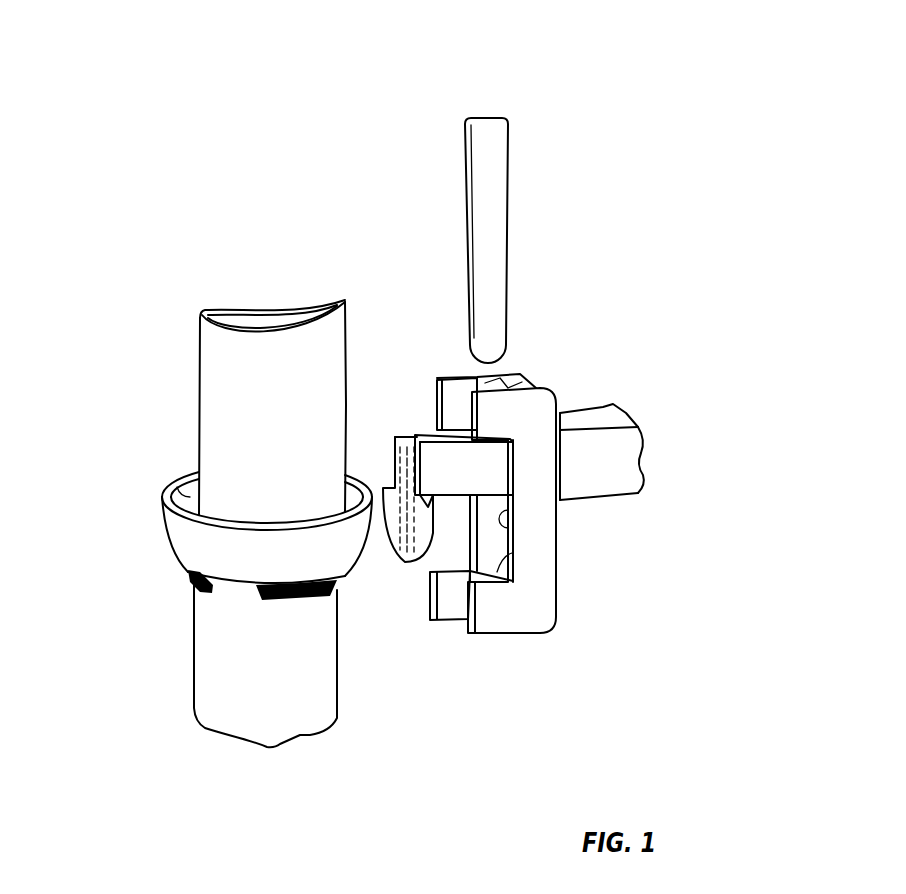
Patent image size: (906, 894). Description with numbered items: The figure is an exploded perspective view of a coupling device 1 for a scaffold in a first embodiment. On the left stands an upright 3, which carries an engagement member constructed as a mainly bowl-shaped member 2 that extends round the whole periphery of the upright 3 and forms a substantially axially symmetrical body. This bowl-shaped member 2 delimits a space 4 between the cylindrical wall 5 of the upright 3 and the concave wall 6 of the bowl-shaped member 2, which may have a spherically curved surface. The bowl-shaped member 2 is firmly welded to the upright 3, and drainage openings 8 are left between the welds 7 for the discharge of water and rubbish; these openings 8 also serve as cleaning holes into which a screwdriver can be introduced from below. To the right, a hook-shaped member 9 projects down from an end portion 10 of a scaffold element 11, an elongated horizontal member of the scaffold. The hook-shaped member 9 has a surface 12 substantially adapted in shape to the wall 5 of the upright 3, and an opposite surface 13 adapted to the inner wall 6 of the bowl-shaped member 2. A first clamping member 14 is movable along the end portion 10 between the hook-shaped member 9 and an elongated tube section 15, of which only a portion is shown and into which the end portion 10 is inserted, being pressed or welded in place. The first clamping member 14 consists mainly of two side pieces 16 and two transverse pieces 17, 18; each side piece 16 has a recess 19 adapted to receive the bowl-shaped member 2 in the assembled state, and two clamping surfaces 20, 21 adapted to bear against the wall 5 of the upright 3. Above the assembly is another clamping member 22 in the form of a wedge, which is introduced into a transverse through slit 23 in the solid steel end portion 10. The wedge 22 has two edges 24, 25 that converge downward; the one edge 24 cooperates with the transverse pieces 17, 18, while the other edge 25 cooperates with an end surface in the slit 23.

The coupling device 1 is at (544, 342).
The bowl-shaped member 2 is at (152, 545).
The upright 3 is at (185, 428).
The space 4 is at (177, 487).
The cylindrical wall 5 is at (210, 452).
The concave wall 6 is at (355, 494).
The welds 7 is at (186, 586).
The drainage openings 8 is at (235, 585).
The hook-shaped member 9 is at (383, 568).
The end portion 10 is at (435, 465).
The scaffold element 11 is at (602, 388).
The surface 12 is at (427, 553).
The surface 13 is at (434, 594).
The first clamping member 14 is at (573, 640).
The tube section 15 is at (613, 453).
The side pieces 16 is at (533, 583).
The transverse piece 17 is at (500, 377).
The transverse piece 18 is at (497, 572).
The recess 19 is at (513, 525).
The clamping surface 20 is at (472, 400).
The clamping surface 21 is at (467, 607).
The clamping member 22 is at (495, 192).
The slit 23 is at (440, 383).
The edge 24 is at (462, 195).
The edge 25 is at (508, 158).